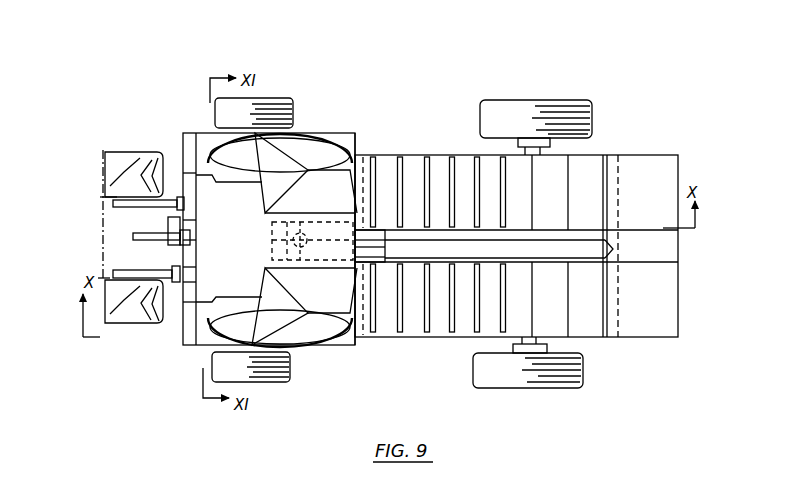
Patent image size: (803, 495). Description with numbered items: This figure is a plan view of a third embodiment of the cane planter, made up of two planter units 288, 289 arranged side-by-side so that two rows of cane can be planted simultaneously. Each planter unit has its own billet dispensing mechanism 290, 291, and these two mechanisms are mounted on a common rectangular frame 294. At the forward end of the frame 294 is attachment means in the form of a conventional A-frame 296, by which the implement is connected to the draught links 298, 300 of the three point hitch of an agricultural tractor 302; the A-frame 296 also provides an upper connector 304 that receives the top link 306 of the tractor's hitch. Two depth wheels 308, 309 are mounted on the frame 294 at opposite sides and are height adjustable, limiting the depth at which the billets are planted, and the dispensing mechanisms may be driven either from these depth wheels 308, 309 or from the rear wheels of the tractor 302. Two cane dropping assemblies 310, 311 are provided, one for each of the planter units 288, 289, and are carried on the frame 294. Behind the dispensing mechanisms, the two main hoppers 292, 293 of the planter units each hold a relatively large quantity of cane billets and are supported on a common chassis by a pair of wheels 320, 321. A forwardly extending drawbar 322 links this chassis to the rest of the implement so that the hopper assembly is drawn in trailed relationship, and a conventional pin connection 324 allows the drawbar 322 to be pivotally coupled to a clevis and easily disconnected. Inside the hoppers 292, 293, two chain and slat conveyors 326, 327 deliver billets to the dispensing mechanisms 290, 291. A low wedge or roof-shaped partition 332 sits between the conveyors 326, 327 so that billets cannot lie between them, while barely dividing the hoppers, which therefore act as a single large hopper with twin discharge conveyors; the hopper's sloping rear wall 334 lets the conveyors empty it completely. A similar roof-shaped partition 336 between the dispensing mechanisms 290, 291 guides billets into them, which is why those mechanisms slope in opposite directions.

The planter unit 288 is at (433, 356).
The planter unit 289 is at (354, 127).
The billet dispensing mechanism 290 is at (327, 353).
The billet dispensing mechanism 291 is at (312, 128).
The main hopper 292 is at (410, 338).
The main hopper 293 is at (438, 153).
The rectangular frame 294 is at (265, 260).
The A-frame 296 is at (196, 273).
The draught link 298 is at (131, 313).
The draught link 300 is at (152, 208).
The agricultural tractor 302 is at (119, 150).
The upper connector 304 is at (203, 243).
The top link 306 is at (150, 242).
The depth wheel 308 is at (290, 382).
The depth wheel 309 is at (279, 98).
The cane dropping assembly 310 is at (185, 345).
The cane dropping assembly 311 is at (207, 168).
The wheel 320 is at (583, 388).
The wheel 321 is at (480, 112).
The drawbar 322 is at (335, 268).
The pin connection 324 is at (268, 243).
The chain and slat conveyor 326 is at (504, 312).
The chain and slat conveyor 327 is at (512, 193).
The roof-shaped partition 332 is at (542, 260).
The sloping rear wall 334 is at (652, 175).
The roof-shaped partition 336 is at (346, 290).